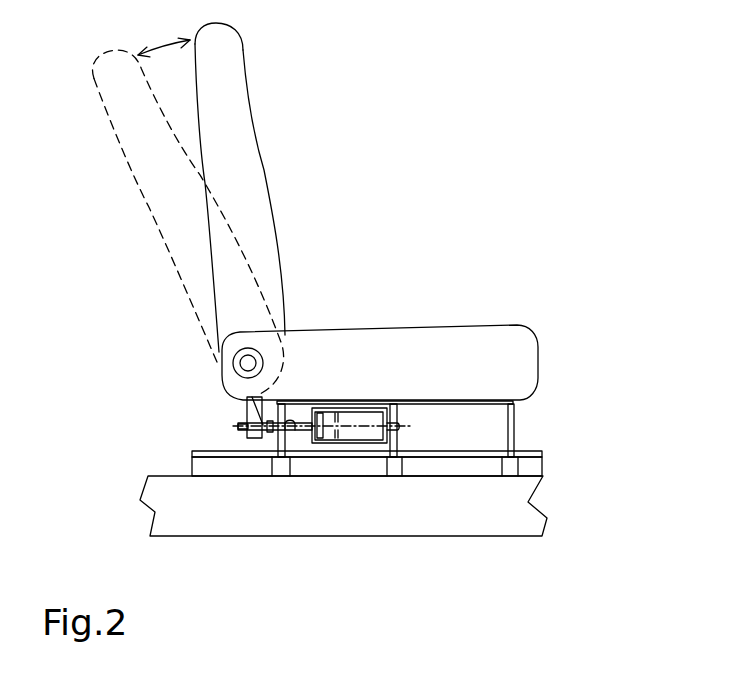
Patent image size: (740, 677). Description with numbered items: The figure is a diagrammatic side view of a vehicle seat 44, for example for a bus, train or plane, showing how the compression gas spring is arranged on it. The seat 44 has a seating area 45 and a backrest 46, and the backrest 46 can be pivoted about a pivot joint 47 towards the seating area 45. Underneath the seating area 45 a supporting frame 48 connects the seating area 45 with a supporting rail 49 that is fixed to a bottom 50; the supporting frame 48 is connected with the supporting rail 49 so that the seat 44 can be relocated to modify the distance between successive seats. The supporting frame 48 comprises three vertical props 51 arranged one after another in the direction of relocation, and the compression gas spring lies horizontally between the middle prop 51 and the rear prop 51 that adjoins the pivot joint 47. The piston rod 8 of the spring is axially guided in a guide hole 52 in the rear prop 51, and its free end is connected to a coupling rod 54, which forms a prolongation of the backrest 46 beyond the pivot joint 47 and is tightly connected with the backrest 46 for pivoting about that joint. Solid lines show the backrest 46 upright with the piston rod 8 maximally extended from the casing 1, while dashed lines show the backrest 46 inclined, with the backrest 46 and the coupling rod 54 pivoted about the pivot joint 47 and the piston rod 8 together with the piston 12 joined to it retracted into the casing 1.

The casing 1 is at (368, 443).
The piston rod 8 is at (305, 437).
The piston 12 is at (318, 442).
The seat 44 is at (283, 166).
The seating area 45 is at (358, 348).
The backrest 46 is at (227, 83).
The pivot joint 47 is at (245, 363).
The supporting frame 48 is at (529, 427).
The supporting rail 49 is at (533, 472).
The bottom 50 is at (155, 492).
The vertical prop 51 is at (513, 442).
The guide hole 52 is at (297, 435).
The coupling rod 54 is at (248, 407).